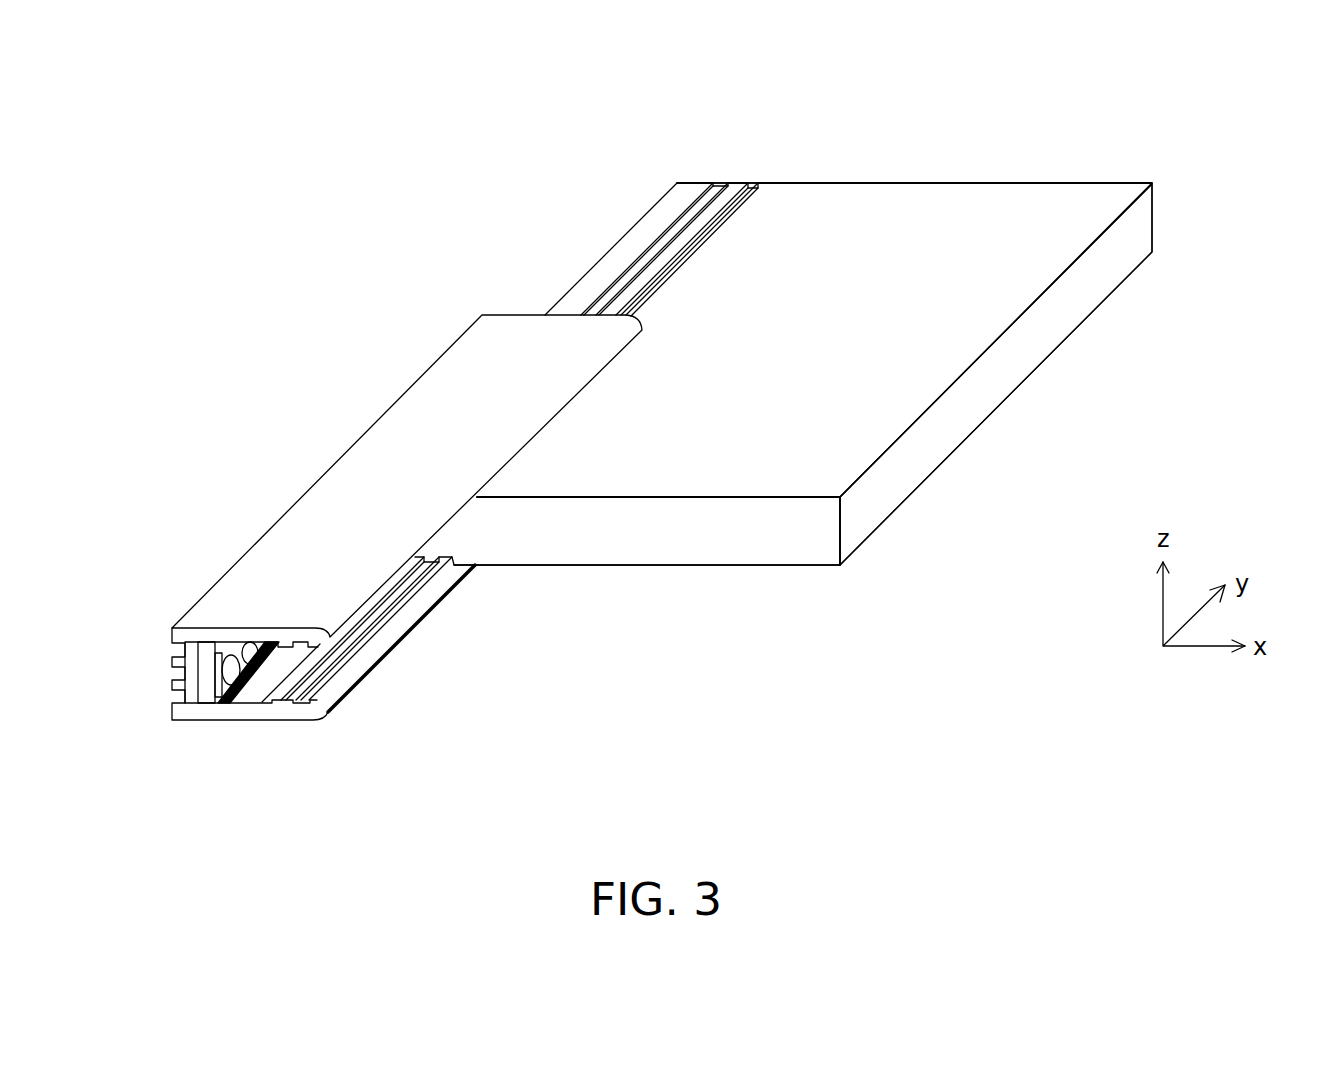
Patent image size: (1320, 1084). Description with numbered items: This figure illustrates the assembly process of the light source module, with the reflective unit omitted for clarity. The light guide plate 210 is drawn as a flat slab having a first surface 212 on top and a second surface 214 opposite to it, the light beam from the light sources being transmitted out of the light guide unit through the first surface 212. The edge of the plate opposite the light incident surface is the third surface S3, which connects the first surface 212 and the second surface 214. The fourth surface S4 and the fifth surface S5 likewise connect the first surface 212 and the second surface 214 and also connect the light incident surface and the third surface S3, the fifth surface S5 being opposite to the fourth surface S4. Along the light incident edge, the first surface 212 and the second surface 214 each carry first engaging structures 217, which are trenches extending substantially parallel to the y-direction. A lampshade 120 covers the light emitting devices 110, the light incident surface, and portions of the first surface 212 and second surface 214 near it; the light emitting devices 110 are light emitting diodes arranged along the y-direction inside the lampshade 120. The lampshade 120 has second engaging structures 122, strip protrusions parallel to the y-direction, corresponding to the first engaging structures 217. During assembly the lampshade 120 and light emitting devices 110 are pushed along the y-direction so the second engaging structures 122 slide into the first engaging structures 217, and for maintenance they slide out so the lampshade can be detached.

The light emitting device 110 is at (254, 648).
The lampshade 120 is at (390, 478).
The second engaging structure 122 is at (323, 682).
The light guide plate 210 is at (1035, 253).
The first surface 212 is at (930, 235).
The second surface 214 is at (642, 564).
The first engaging structure 217 is at (758, 185).
The third surface S3 is at (1032, 340).
The fourth surface S4 is at (725, 525).
The fifth surface S5 is at (1012, 183).